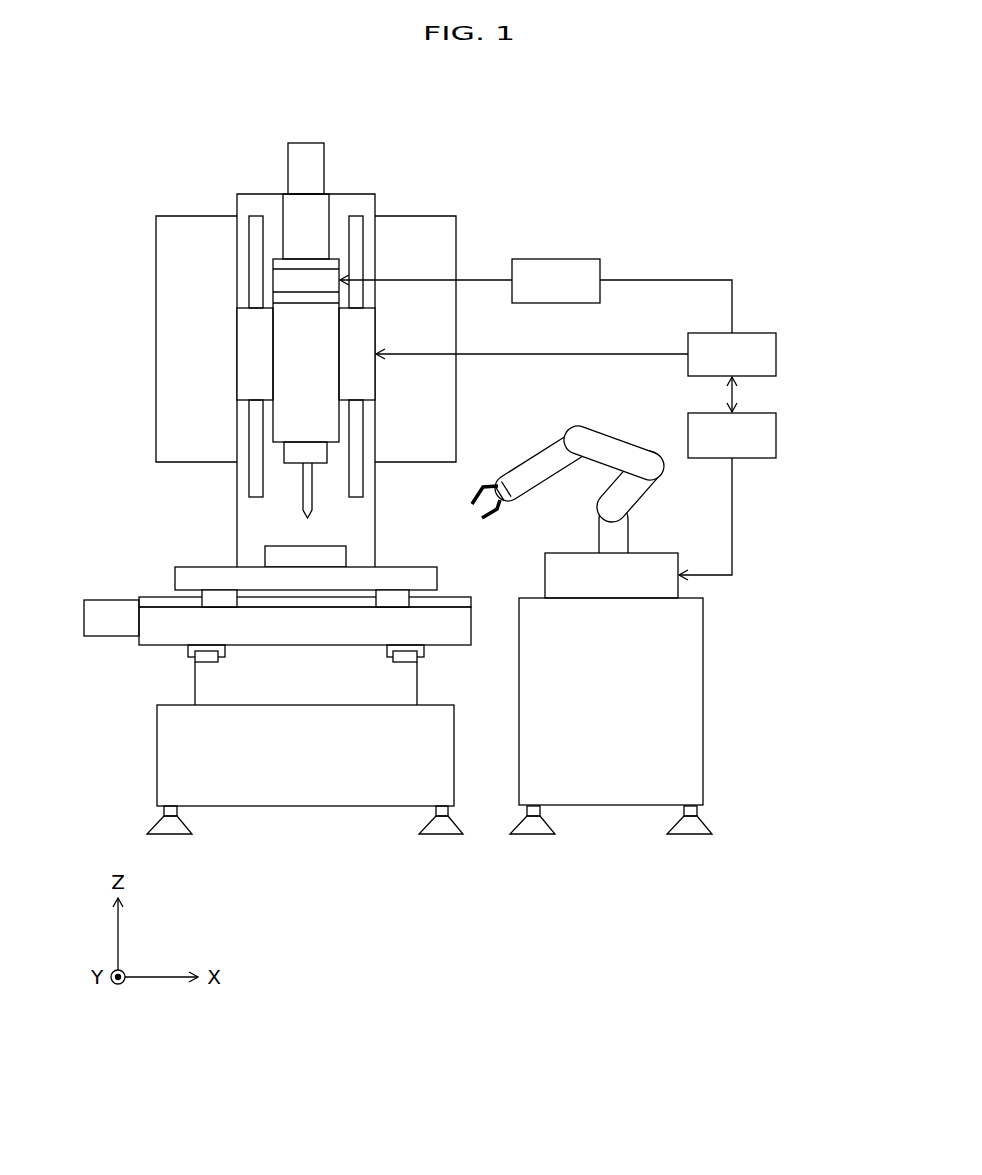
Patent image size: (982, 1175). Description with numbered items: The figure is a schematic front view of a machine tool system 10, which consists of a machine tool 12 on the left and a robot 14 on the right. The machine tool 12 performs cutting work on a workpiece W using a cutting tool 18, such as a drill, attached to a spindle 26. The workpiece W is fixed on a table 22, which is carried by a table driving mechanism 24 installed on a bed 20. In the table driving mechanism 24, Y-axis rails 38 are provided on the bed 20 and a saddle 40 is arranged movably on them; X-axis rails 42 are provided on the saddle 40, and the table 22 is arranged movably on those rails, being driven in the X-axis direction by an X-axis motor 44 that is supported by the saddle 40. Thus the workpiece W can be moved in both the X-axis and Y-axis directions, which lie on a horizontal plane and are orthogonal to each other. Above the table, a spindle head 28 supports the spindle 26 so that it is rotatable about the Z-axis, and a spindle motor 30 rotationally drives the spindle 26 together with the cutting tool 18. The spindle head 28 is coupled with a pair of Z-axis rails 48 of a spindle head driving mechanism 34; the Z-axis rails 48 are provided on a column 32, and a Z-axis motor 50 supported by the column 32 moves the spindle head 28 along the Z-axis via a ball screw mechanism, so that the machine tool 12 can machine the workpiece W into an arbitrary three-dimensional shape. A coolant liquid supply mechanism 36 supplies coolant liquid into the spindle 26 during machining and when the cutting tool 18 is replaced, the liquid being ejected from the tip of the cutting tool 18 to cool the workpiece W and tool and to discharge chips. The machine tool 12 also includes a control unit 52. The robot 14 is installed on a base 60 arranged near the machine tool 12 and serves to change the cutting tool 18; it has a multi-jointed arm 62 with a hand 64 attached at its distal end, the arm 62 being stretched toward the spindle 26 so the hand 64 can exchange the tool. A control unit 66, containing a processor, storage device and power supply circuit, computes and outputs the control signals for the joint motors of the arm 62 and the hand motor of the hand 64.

The machine tool system 10 is at (207, 106).
The machine tool 12 is at (431, 184).
The robot 14 is at (541, 424).
The cutting tool 18 is at (313, 481).
The bed 20 is at (302, 782).
The table 22 is at (198, 572).
The table driving mechanism 24 is at (128, 655).
The spindle 26 is at (303, 450).
The spindle head 28 is at (291, 352).
The spindle motor 30 is at (297, 246).
The column 32 is at (346, 206).
The spindle head driving mechanism 34 is at (226, 318).
The coolant liquid supply mechanism 36 is at (545, 259).
The Y-axis rails 38 is at (205, 660).
The saddle 40 is at (465, 623).
The X-axis rails 42 is at (452, 605).
The X-axis motor 44 is at (101, 612).
The Z-axis rails 48 is at (256, 222).
The Z-axis motor 50 is at (304, 153).
The control unit 52 is at (776, 354).
The base 60 is at (703, 698).
The arm 62 is at (593, 442).
The hand 64 is at (470, 490).
The control unit 66 is at (776, 435).
The workpiece W is at (300, 555).